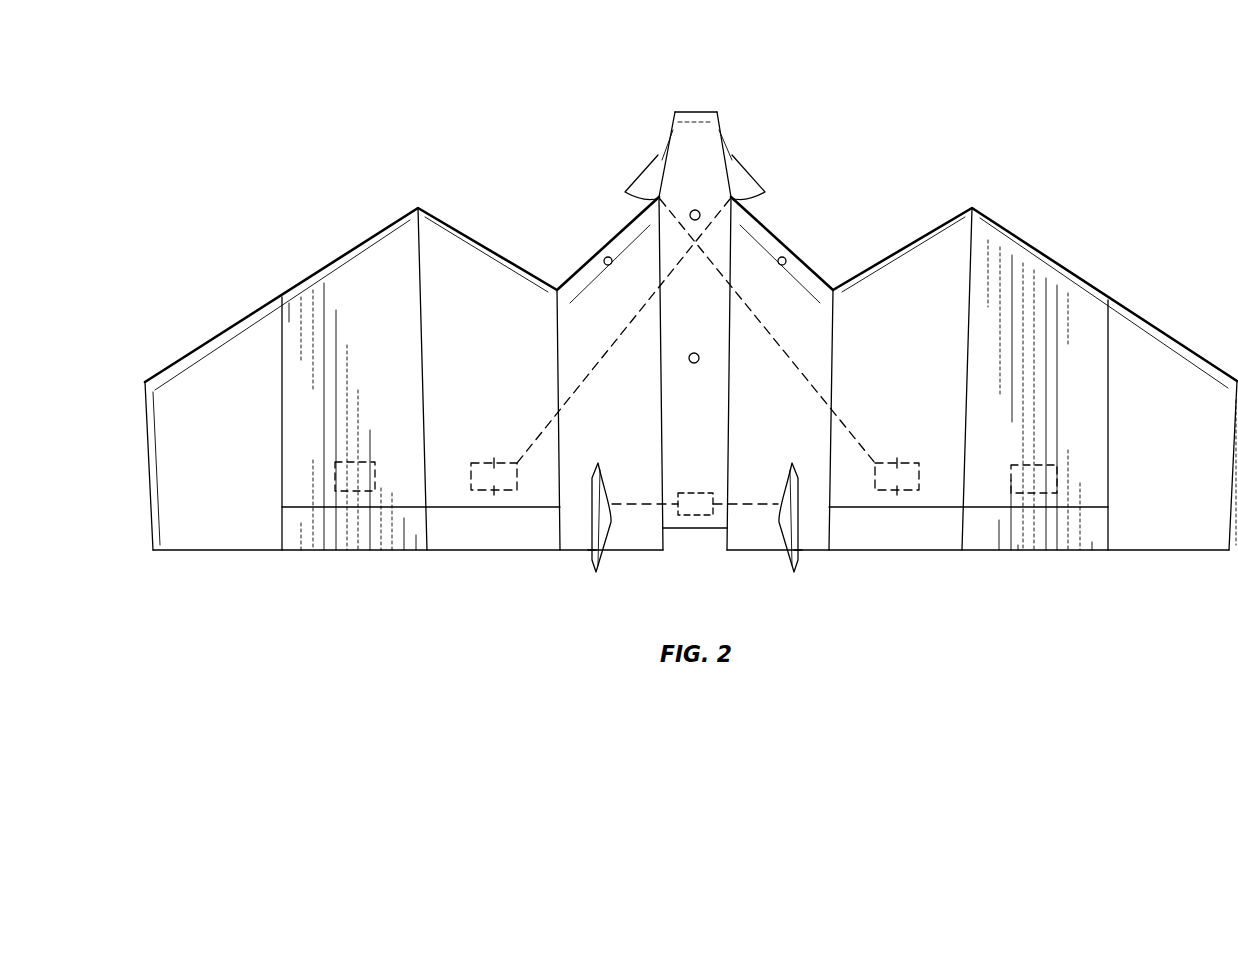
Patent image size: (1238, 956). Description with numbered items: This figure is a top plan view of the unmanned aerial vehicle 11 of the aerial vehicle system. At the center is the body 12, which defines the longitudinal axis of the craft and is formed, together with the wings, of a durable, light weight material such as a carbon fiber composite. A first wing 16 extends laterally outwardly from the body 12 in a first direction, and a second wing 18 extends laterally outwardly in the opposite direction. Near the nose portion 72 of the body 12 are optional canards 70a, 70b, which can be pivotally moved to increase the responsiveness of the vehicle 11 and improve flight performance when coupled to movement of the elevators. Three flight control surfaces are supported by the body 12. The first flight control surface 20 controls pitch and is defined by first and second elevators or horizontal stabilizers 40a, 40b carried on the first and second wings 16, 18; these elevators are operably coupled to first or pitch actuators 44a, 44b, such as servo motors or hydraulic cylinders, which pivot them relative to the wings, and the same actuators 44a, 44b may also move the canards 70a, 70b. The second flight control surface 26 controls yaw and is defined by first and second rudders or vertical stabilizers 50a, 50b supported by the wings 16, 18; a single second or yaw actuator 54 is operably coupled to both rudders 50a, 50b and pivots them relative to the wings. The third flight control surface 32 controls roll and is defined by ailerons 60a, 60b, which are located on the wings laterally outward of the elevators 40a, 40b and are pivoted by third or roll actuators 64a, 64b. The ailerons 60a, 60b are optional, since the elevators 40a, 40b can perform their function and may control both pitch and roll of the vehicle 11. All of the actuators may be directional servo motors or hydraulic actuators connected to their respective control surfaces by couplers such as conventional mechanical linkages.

The unmanned aerial vehicle 11 is at (1070, 140).
The body 12 is at (757, 220).
The first wing 16 is at (1147, 547).
The second wing 18 is at (263, 542).
The first flight control surface 20 is at (506, 545).
The second flight control surface 26 is at (588, 553).
The third flight control surface 32 is at (301, 541).
The first elevator 40a is at (883, 545).
The second elevator 40b is at (450, 542).
The first pitch actuator 44a is at (896, 462).
The second pitch actuator 44b is at (492, 462).
The first rudder 50a is at (793, 576).
The second rudder 50b is at (598, 576).
The yaw actuator 54 is at (698, 492).
The first aileron 60a is at (1018, 550).
The second aileron 60b is at (398, 542).
The first roll actuator 64a is at (1048, 465).
The second roll actuator 64b is at (376, 462).
The first canard 70a is at (748, 176).
The second canard 70b is at (636, 183).
The nose portion 72 is at (696, 112).